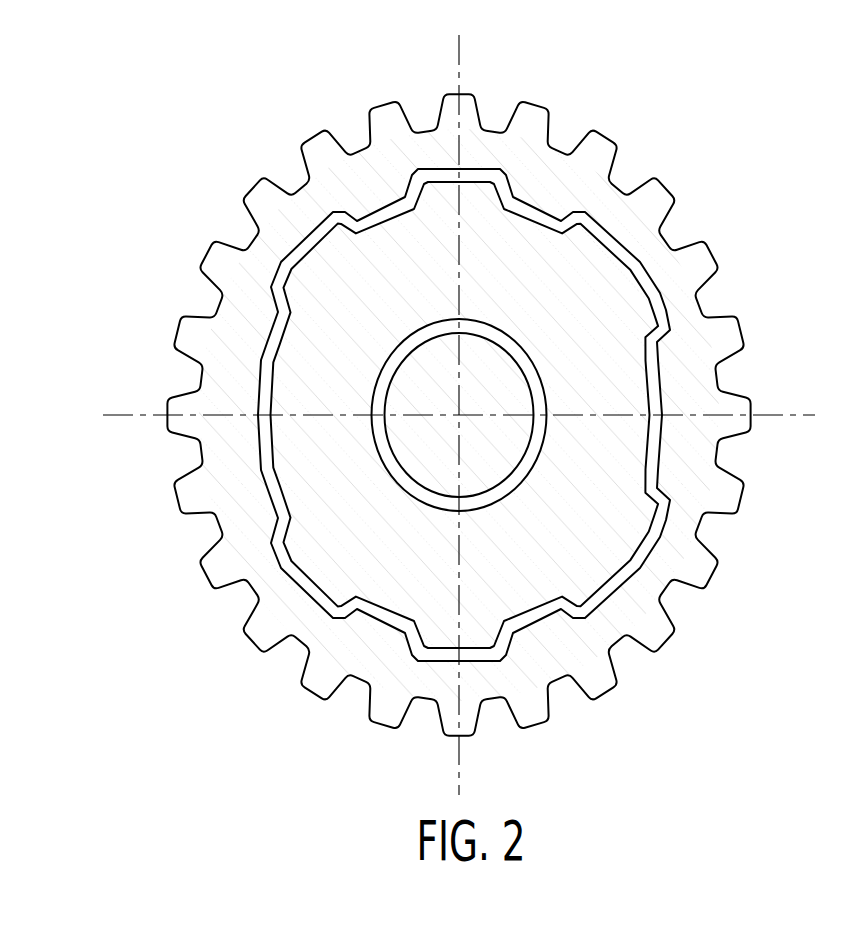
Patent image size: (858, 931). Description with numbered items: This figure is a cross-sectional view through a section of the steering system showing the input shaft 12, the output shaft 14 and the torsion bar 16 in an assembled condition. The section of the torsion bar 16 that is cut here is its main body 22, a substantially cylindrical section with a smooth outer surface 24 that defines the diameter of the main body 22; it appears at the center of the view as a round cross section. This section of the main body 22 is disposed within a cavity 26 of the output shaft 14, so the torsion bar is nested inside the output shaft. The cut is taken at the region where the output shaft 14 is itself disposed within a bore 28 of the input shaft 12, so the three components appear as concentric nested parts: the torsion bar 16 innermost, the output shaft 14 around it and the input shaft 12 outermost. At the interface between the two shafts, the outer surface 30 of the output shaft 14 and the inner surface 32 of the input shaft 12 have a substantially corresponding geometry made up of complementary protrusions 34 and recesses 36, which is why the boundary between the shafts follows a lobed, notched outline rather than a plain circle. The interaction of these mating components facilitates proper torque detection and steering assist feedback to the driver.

The input shaft 12 is at (597, 152).
The output shaft 14 is at (615, 523).
The torsion bar 16 is at (527, 364).
The main body 22 is at (497, 442).
The outer surface 24 is at (534, 399).
The cavity 26 is at (418, 492).
The bore 28 is at (261, 371).
The outer surface 30 is at (520, 218).
The inner surface 32 is at (346, 220).
The protrusions 34 is at (471, 632).
The recesses 36 is at (590, 612).